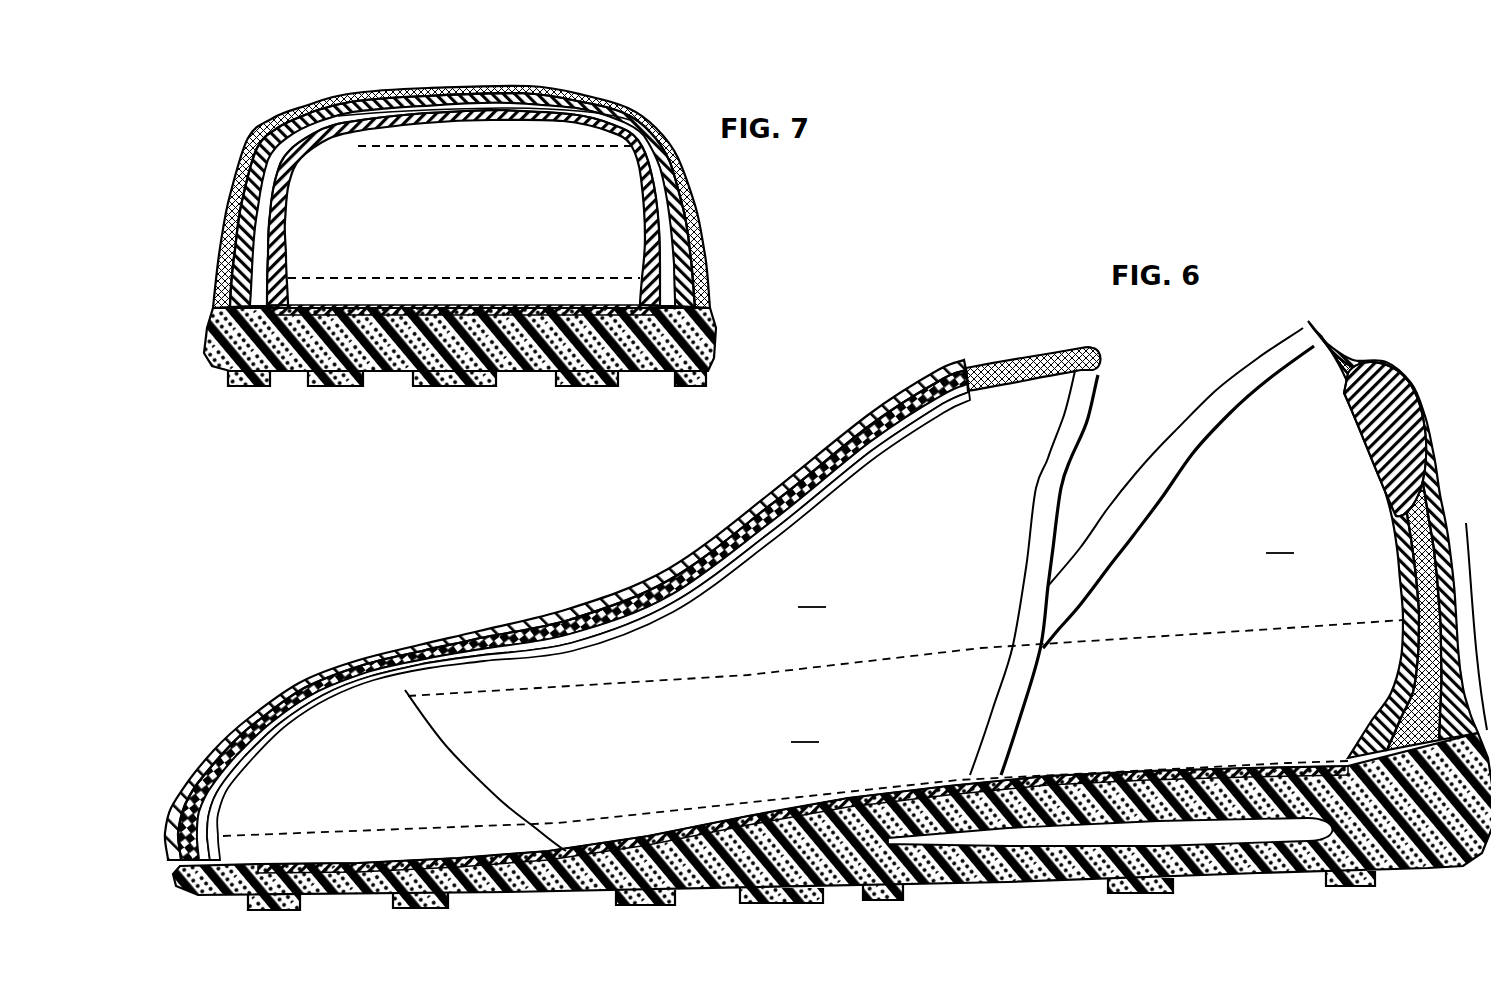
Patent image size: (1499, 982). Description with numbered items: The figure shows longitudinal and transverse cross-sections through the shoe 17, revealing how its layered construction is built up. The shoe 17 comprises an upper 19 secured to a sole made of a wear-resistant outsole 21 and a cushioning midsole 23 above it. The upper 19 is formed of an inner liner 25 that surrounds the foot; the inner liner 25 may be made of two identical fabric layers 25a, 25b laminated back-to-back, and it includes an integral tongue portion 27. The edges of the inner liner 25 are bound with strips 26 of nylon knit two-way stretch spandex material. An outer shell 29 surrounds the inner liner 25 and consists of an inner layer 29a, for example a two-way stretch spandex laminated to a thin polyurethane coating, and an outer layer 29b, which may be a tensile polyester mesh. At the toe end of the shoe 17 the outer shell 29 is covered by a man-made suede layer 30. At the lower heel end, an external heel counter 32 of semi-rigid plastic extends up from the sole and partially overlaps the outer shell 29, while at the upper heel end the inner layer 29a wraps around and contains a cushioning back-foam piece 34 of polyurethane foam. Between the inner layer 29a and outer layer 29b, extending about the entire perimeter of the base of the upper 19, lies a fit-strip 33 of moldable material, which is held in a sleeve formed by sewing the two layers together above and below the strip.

In FIG. 6, the shoe 17 is at (340, 565).
In FIG. 6, the upper 19 is at (646, 540).
In FIG. 7, the wear-resistant outsole 21 is at (443, 380).
In FIG. 6, the wear-resistant outsole 21 is at (777, 893).
In FIG. 7, the cushioning midsole 23 is at (713, 310).
In FIG. 6, the cushioning midsole 23 is at (1487, 793).
In FIG. 6, the inner liner 25 is at (1041, 565).
In FIG. 7, the fabric layer 25a is at (407, 107).
In FIG. 6, the fabric layer 25a is at (385, 681).
In FIG. 7, the fabric layer 25b is at (407, 130).
In FIG. 6, the fabric layer 25b is at (396, 686).
In FIG. 6, the strips 26 is at (1165, 403).
In FIG. 6, the tongue portion 27 is at (1020, 355).
In FIG. 6, the outer shell 29 is at (815, 575).
In FIG. 7, the inner layer 29a is at (250, 127).
In FIG. 6, the inner layer 29a is at (232, 783).
In FIG. 7, the outer layer 29b is at (232, 150).
In FIG. 6, the outer layer 29b is at (185, 781).
In FIG. 6, the man-made suede layer 30 is at (258, 676).
In FIG. 6, the external heel counter 32 is at (1472, 640).
In FIG. 7, the fit-strip 33 is at (280, 190).
In FIG. 6, the fit-strip 33 is at (207, 738).
In FIG. 6, the cushioning back-foam piece 34 is at (1395, 428).